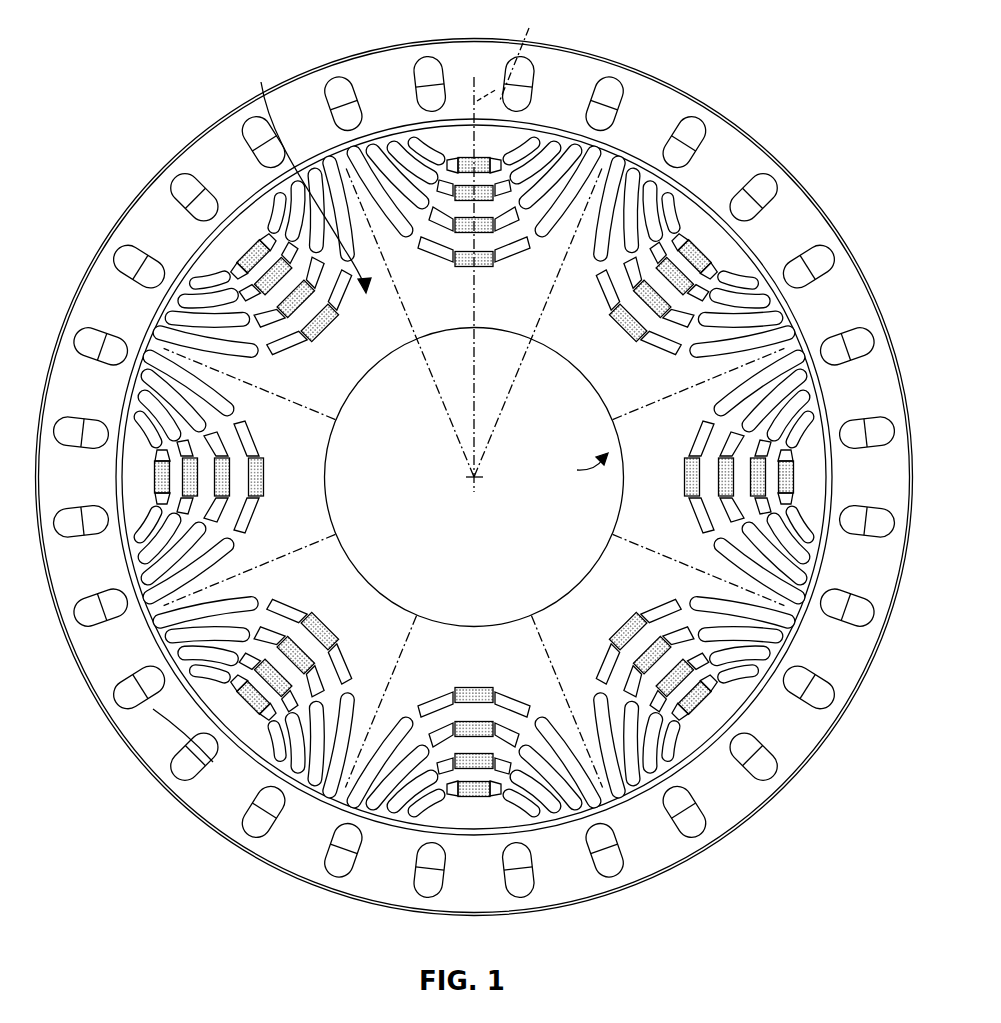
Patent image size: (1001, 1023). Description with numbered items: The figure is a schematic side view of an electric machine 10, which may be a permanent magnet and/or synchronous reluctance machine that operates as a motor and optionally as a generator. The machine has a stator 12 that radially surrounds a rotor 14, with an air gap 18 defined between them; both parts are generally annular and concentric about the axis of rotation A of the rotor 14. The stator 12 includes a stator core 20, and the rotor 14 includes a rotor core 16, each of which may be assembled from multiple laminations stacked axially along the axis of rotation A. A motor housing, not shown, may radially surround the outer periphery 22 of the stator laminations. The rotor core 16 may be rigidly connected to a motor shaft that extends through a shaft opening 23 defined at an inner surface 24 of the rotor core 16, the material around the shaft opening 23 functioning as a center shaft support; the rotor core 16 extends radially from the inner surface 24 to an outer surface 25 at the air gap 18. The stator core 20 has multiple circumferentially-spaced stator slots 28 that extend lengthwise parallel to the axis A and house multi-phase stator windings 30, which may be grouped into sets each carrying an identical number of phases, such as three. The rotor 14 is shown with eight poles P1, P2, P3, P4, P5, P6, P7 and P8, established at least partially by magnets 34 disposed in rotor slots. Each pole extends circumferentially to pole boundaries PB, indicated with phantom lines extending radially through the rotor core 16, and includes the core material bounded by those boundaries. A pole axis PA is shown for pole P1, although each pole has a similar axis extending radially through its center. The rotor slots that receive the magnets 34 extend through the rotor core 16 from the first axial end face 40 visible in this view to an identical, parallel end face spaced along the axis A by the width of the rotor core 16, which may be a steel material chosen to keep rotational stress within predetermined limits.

The electric machine 10 is at (780, 92).
The stator 12 is at (798, 180).
The rotor 14 is at (150, 630).
The rotor core 16 is at (133, 497).
The air gap 18 is at (212, 718).
The stator core 20 is at (757, 158).
The outer periphery 22 is at (890, 622).
The shaft opening 23 is at (575, 542).
The inner surface 24 is at (576, 470).
The outer surface 25 is at (190, 702).
The stator slots 28 is at (823, 258).
The stator windings 30 is at (790, 267).
The magnets 34 is at (459, 194).
The first axial end face 40 is at (306, 175).
The axis of rotation A is at (474, 482).
The pole axis PA is at (511, 50).
The pole boundaries PB is at (430, 398).
The pole P1 is at (527, 311).
The pole P2 is at (592, 336).
The pole P3 is at (669, 451).
The pole P4 is at (593, 631).
The pole P5 is at (527, 667).
The pole P6 is at (392, 639).
The pole P7 is at (317, 451).
The pole P8 is at (392, 339).